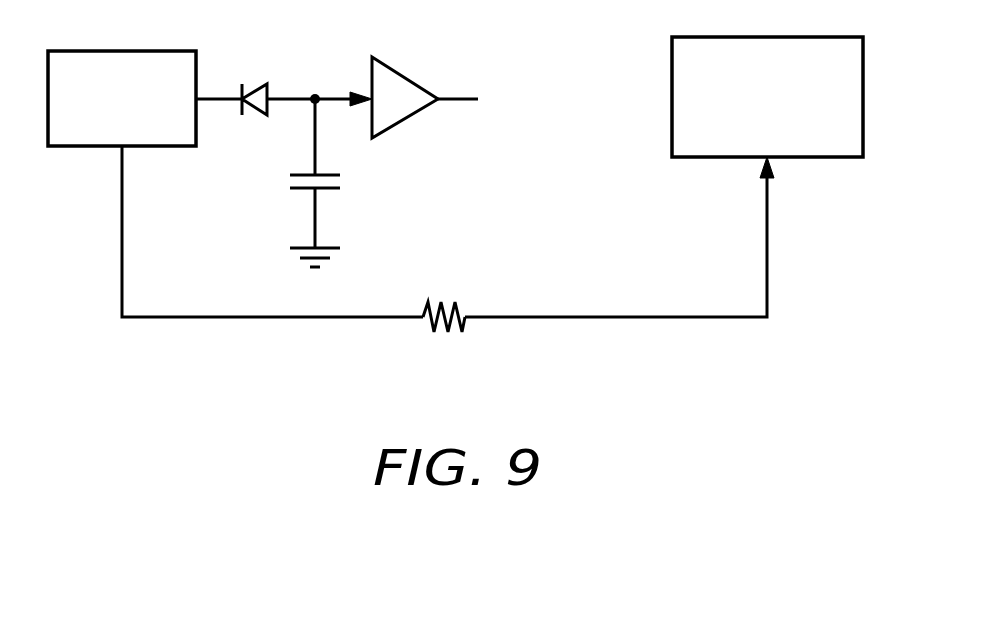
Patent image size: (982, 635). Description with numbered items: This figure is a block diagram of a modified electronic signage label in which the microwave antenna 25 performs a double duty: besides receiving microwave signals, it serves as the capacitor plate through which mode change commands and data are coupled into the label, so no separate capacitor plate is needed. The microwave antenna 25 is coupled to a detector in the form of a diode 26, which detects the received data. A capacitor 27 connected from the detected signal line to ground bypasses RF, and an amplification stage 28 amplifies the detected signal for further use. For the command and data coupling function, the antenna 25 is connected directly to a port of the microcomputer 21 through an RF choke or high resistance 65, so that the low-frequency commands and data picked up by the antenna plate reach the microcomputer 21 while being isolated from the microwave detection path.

The microcomputer 21 is at (812, 37).
The microwave antenna 25 is at (146, 50).
The diode 26 is at (252, 85).
The capacitor 27 is at (344, 184).
The amplification stage 28 is at (386, 65).
The high resistance 65 is at (440, 297).